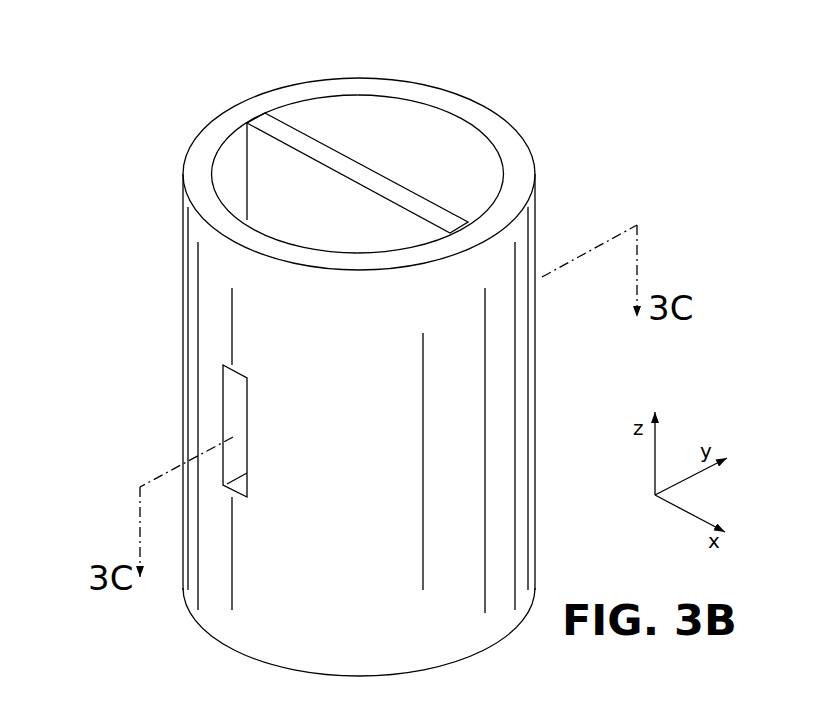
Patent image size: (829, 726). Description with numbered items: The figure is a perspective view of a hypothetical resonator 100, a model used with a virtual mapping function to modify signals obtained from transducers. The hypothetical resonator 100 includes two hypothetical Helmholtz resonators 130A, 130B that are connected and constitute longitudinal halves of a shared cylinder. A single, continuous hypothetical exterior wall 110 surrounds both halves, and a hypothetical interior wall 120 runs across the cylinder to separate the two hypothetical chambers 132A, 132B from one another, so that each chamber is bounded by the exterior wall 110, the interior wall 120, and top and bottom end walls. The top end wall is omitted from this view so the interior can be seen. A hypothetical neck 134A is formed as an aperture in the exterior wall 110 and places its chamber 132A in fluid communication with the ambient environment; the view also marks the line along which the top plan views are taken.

The hypothetical resonator 100 is at (127, 118).
The hypothetical exterior wall 110 is at (205, 300).
The hypothetical interior wall 120 is at (338, 163).
The hypothetical Helmholtz resonator 130A is at (193, 142).
The hypothetical Helmholtz resonator 130B is at (515, 127).
The hypothetical chamber 132A is at (240, 160).
The hypothetical chamber 132B is at (427, 142).
The hypothetical neck 134A is at (227, 420).